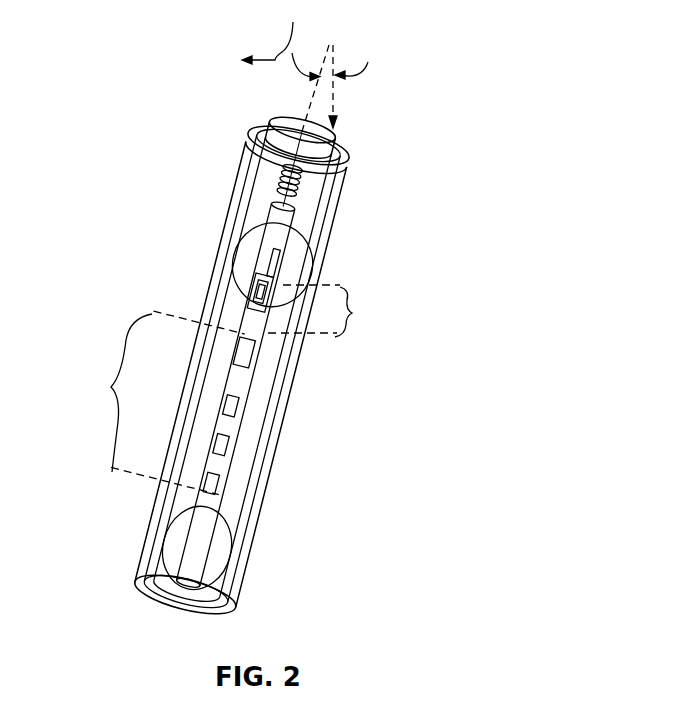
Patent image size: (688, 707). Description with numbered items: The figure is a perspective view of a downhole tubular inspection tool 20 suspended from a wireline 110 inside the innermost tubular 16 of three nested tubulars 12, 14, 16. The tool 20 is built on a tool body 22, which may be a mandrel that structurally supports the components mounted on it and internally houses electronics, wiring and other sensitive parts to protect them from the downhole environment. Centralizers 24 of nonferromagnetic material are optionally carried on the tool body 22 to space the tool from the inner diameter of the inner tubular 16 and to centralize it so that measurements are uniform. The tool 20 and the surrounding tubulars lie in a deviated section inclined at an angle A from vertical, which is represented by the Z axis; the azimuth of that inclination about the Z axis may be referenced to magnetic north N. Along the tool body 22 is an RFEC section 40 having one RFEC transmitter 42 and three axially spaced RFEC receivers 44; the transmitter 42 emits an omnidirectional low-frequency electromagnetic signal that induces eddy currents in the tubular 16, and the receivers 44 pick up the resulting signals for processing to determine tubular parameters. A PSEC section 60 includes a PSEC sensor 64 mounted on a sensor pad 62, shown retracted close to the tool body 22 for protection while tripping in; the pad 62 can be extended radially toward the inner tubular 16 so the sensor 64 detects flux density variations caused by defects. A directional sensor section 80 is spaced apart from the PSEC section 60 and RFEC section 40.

The tubular 12 is at (291, 400).
The tubular 14 is at (290, 368).
The innermost tubular 16 is at (281, 135).
The downhole tubular inspection tool 20 is at (378, 302).
The tool body 22 is at (276, 226).
The centralizer 24 is at (295, 243).
The RFEC section 40 is at (110, 387).
The RFEC transmitter 42 is at (246, 338).
The RFEC receiver 44 is at (230, 397).
The PSEC section 60 is at (352, 313).
The sensor pad 62 is at (268, 268).
The PSEC sensor 64 is at (260, 297).
The directional sensor section 80 is at (298, 196).
The wireline 110 is at (303, 172).
The magnetic north N is at (272, 32).
The angle A is at (337, 88).
The Z axis Z is at (344, 92).